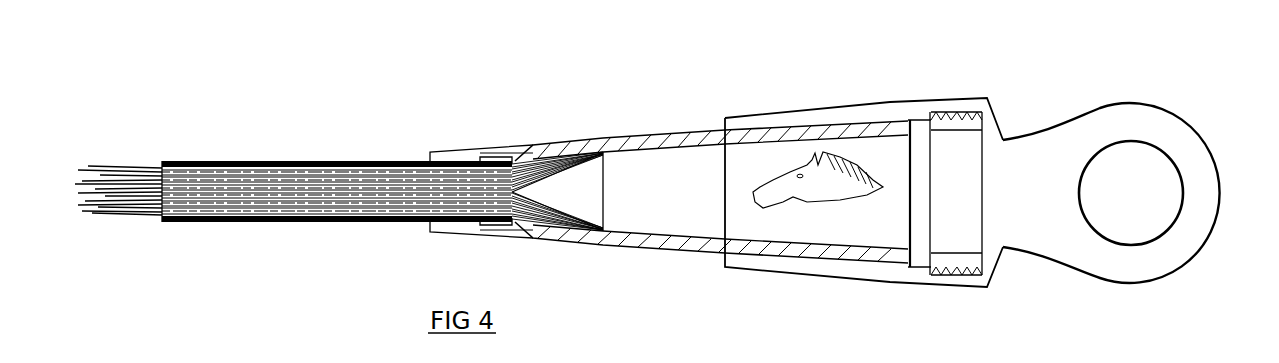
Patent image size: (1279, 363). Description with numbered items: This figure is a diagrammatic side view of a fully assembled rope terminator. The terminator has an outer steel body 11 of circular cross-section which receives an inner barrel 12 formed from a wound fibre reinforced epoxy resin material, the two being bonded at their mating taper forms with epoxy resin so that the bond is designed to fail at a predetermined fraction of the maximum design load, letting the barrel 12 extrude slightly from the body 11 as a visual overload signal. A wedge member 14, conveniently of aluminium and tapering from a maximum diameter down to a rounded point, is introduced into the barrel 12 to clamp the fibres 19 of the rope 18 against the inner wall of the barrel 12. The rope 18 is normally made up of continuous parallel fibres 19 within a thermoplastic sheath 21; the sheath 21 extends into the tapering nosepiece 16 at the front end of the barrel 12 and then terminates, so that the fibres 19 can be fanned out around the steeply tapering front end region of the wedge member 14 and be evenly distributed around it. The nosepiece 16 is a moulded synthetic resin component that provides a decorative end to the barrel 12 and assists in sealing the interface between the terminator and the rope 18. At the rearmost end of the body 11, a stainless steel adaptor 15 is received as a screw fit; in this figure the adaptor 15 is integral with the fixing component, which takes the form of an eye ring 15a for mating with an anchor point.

The body 11 is at (846, 108).
The barrel 12 is at (643, 143).
The wedge member 14 is at (693, 193).
The adaptor 15 is at (1042, 153).
The eye ring 15a is at (1173, 140).
The nosepiece 16 is at (463, 157).
The rope 18 is at (240, 237).
The fibres 19 is at (572, 153).
The thermoplastic sheath 21 is at (218, 160).